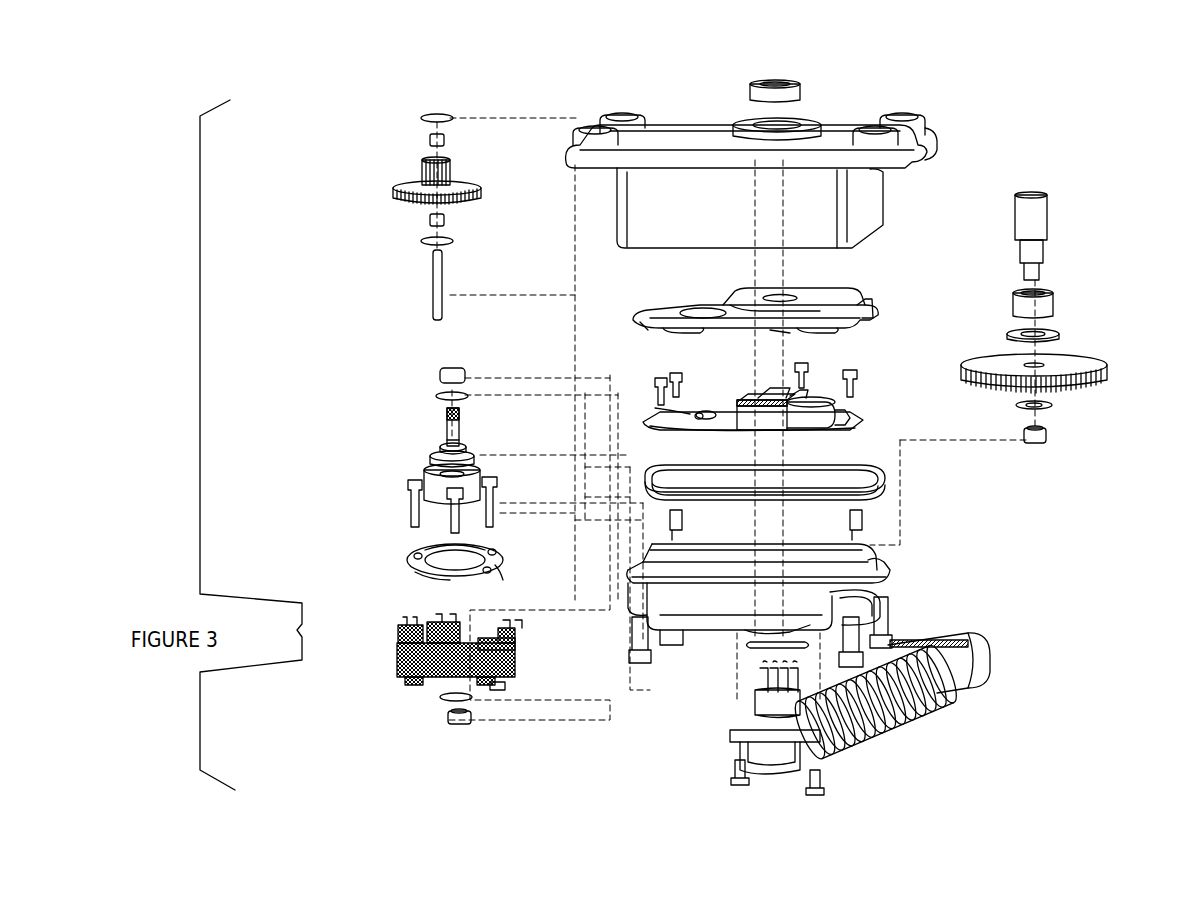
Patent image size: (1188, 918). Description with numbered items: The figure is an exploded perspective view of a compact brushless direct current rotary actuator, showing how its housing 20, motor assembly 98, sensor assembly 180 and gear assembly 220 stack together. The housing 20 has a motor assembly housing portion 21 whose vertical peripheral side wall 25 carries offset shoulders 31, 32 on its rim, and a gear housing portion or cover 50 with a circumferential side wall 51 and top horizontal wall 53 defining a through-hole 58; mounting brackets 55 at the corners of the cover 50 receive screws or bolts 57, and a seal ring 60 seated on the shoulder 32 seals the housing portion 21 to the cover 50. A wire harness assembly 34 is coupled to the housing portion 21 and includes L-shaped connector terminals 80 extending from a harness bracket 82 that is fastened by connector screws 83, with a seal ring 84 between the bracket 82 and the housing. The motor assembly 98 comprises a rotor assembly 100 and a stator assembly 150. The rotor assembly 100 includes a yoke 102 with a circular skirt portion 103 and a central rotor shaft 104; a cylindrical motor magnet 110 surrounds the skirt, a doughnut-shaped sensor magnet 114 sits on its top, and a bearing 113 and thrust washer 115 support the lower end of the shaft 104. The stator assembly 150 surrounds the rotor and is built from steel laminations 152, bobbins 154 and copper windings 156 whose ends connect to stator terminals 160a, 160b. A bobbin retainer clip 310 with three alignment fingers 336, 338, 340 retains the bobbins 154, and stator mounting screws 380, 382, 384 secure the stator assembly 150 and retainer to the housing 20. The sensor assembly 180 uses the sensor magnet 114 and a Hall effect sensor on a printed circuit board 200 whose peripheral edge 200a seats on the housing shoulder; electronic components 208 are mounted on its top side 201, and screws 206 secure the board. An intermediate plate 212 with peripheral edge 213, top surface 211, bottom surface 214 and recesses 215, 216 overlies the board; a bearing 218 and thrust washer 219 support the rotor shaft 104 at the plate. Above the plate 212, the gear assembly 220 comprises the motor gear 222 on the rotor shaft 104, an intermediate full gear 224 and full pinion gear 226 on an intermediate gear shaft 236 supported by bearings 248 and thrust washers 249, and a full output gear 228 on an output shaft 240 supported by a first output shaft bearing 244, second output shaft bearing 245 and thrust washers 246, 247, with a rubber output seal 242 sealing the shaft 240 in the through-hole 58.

The housing 20 is at (668, 120).
The motor assembly housing portion 21 is at (715, 592).
The peripheral side wall 25 is at (723, 588).
The offset groove or shoulder 31 is at (880, 567).
The offset groove or shoulder 32 is at (880, 558).
The wire harness assembly 34 is at (902, 718).
The gear housing portion or cover 50 is at (805, 155).
The circumferential vertical side wall 51 is at (650, 224).
The top horizontal wall 53 is at (708, 128).
The mounting arm or bracket 55 is at (932, 142).
The screw or bolt 57 is at (637, 672).
The cylindrical through-hole 58 is at (798, 125).
The seal ring 60 is at (880, 480).
The connector terminals 80 is at (868, 722).
The harness bracket 82 is at (728, 742).
The connector screws 83 is at (735, 782).
The seal ring 84 is at (762, 652).
The motor assembly 98 is at (320, 527).
The rotor assembly 100 is at (405, 462).
The yoke 102 is at (492, 476).
The circular skirt portion 103 is at (470, 472).
The rotor shaft 104 is at (448, 438).
The motor magnet 110 is at (475, 490).
The bearing 113 is at (447, 725).
The sensor magnet 114 is at (440, 450).
The thrust washer 115 is at (435, 700).
The stator assembly 150 is at (395, 665).
The steel laminations 152 is at (505, 690).
The bobbins 154 is at (400, 683).
The windings 156 is at (490, 640).
The stator terminal 160a is at (510, 628).
The stator terminal 160b is at (515, 632).
The sensor assembly 180 is at (862, 358).
The printed circuit board 200 is at (733, 405).
The peripheral circumferential edge 200a is at (712, 432).
The top side or surface 201 is at (718, 415).
The screws 206 is at (860, 392).
The electronic components 208 is at (655, 412).
The top surface 211 is at (700, 308).
The intermediate plate 212 is at (868, 298).
The peripheral circumferential edge 213 is at (650, 330).
The bottom surface 214 is at (790, 333).
The first recess or groove 215 is at (690, 313).
The second recess or groove 216 is at (783, 296).
The bearing 218 is at (440, 378).
The thrust washer 219 is at (438, 395).
The gear assembly 220 is at (340, 233).
The motor gear 222 is at (445, 417).
The intermediate full gear 224 is at (410, 190).
The full pinion gear 226 is at (440, 170).
The full output gear 228 is at (1088, 366).
The intermediate gear shaft 236 is at (430, 282).
The output shaft 240 is at (1050, 215).
The rubber output seal 242 is at (798, 90).
The first output shaft bearing 244 is at (1055, 300).
The second output shaft bearing 245 is at (1047, 445).
The thrust washer 246 is at (1058, 336).
The thrust washer 247 is at (1052, 410).
The bearings 248 is at (428, 140).
The thrust washers 249 is at (420, 118).
The bobbin retainer clip 310 is at (408, 562).
The retainer alignment finger 336 is at (425, 552).
The retainer alignment finger 338 is at (420, 576).
The retainer alignment finger 340 is at (500, 560).
The stator mounting screw 380 is at (445, 520).
The stator mounting screw 382 is at (490, 520).
The stator mounting screw 384 is at (410, 495).